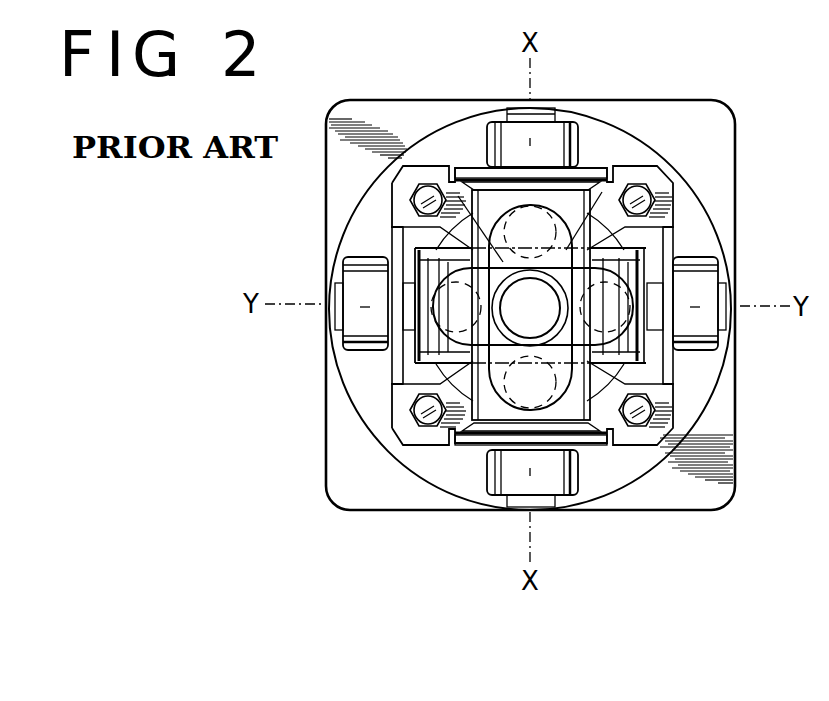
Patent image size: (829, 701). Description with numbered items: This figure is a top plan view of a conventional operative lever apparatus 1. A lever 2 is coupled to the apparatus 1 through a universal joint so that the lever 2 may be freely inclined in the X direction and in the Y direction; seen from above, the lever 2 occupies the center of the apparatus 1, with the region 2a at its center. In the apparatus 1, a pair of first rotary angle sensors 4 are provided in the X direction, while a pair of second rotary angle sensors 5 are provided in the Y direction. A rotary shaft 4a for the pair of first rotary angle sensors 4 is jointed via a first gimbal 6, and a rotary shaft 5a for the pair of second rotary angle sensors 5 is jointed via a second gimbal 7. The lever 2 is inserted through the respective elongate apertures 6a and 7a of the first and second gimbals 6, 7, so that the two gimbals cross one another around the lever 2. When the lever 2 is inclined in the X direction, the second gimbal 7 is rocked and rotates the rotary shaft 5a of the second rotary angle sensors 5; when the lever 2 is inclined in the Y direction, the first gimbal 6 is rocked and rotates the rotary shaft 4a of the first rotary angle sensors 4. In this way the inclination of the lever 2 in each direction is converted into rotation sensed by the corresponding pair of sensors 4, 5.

The apparatus 1 is at (672, 487).
The lever 2 is at (545, 318).
The guide slot 2a is at (493, 343).
The first rotary angle sensors 4 is at (548, 160).
The rotary shaft 4a is at (545, 166).
The second rotary angle sensors 5 is at (352, 282).
The rotary shaft 5a is at (396, 275).
The first gimbal 6 is at (590, 215).
The elongate aperture 6a is at (482, 202).
The second gimbal 7 is at (398, 368).
The elongate aperture 7a is at (656, 363).